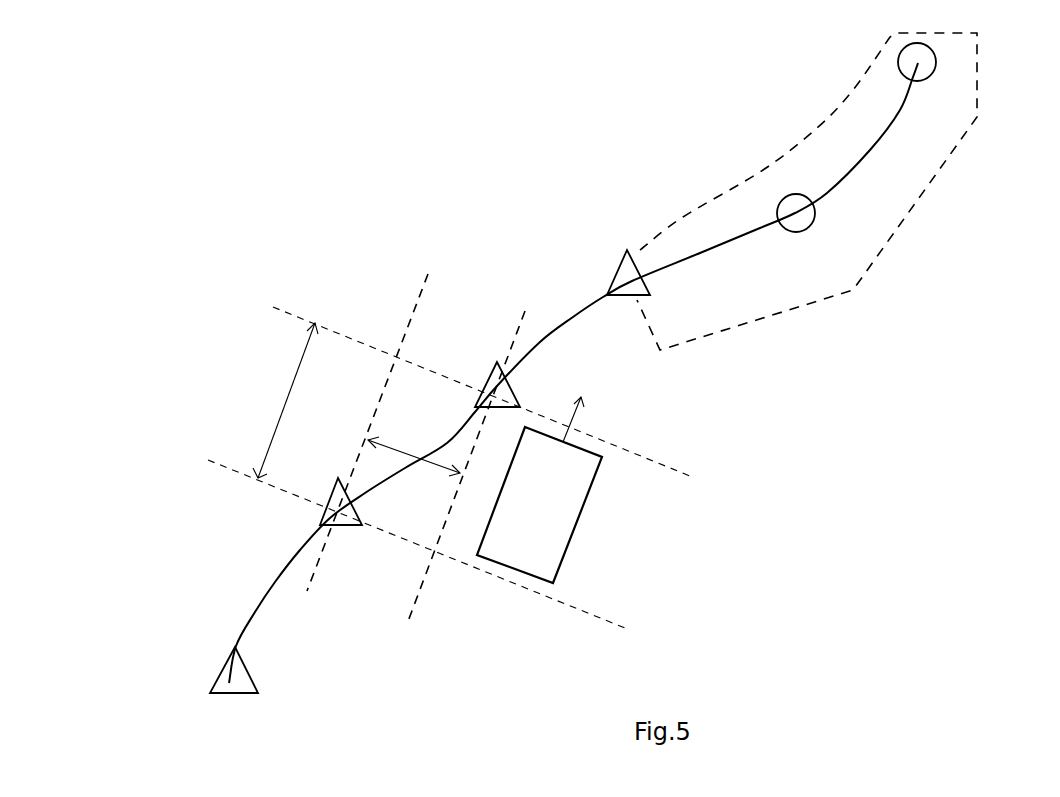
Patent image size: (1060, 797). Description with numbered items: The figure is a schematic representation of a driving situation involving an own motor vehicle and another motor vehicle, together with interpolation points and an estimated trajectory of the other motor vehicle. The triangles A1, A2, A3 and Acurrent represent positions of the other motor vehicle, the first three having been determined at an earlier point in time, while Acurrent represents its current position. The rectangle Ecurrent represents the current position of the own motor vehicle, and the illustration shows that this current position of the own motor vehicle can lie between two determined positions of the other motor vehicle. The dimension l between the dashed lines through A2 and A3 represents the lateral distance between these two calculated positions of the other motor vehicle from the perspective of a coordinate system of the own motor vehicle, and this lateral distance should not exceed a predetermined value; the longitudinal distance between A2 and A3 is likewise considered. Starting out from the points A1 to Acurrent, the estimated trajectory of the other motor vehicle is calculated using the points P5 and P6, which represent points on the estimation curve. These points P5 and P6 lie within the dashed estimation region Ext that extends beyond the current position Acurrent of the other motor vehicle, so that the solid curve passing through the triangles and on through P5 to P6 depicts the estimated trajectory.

The position of the other motor vehicle A1 is at (207, 670).
The position of the other motor vehicle A2 is at (329, 494).
The position of the other motor vehicle A3 is at (490, 368).
The current position of the other motor vehicle Acurrent is at (590, 262).
The point on the estimation curve P5 is at (797, 197).
The point on the estimation curve P6 is at (920, 82).
The current position of the own motor vehicle Ecurrent is at (538, 505).
The estimation region Ext is at (863, 230).
The lateral distance l is at (414, 449).